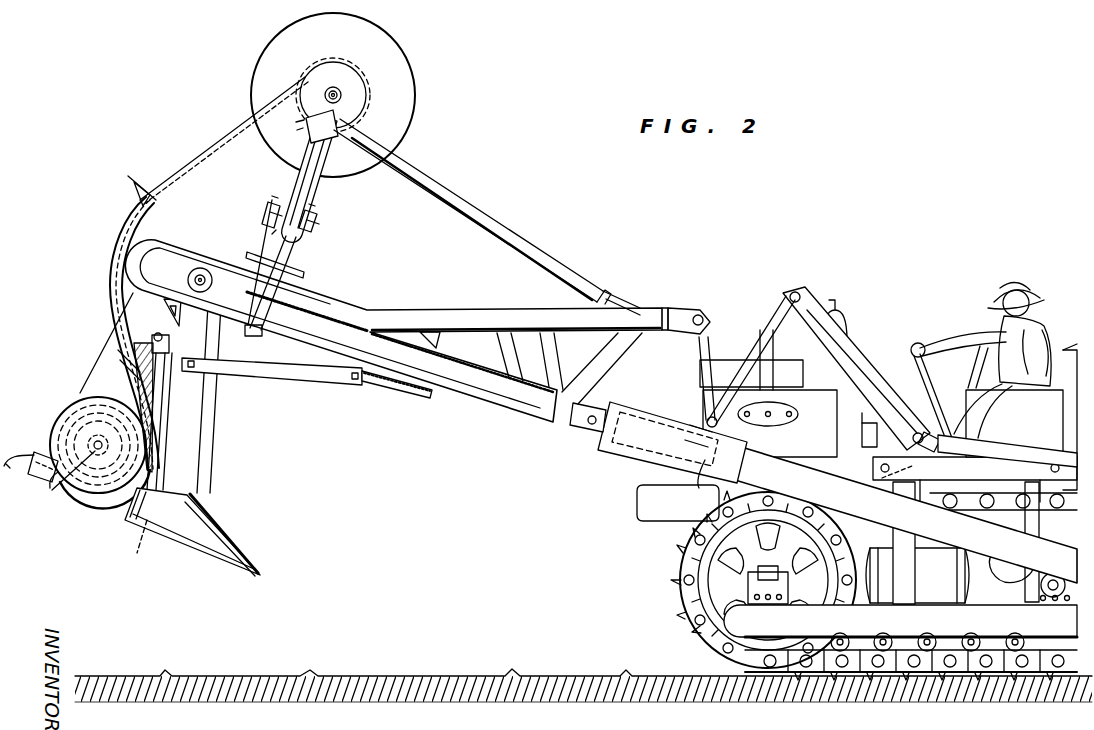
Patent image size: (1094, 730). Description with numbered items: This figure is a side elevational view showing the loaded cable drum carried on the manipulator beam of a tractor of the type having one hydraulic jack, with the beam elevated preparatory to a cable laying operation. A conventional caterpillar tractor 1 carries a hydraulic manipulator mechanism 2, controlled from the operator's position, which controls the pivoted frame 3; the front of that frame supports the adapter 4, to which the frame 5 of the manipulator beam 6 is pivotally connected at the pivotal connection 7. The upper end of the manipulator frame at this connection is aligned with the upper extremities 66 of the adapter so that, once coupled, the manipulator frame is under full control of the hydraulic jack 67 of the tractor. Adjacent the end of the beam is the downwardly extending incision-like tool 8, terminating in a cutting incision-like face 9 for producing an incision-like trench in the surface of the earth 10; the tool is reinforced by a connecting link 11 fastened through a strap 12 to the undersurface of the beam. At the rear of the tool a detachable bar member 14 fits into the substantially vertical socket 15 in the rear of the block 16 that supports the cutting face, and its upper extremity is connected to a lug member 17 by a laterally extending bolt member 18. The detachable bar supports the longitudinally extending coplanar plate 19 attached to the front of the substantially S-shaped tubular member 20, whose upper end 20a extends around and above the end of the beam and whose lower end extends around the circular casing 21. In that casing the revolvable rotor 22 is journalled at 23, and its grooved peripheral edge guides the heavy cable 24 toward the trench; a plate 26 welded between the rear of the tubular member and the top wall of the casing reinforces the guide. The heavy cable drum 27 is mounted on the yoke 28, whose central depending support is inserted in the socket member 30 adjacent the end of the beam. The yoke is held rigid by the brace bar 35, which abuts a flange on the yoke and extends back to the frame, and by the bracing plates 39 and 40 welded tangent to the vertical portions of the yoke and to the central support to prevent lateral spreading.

The caterpillar tractor 1 is at (560, 625).
The hydraulic manipulator mechanism 2 is at (848, 374).
The pivoted frame 3 is at (906, 514).
The adapter 4 is at (622, 458).
The frame of the manipulator beam 5 is at (588, 338).
The manipulator beam 6 is at (456, 350).
The pivotal connection 7 is at (622, 354).
The incision-like tool 8 is at (194, 404).
The cutting incision-like face 9 is at (218, 554).
The surface of the earth 10 is at (424, 680).
The connecting link 11 is at (296, 376).
The strap 12 is at (372, 388).
The detachable bar member 14 is at (152, 457).
The socket 15 is at (137, 553).
The block 16 is at (196, 548).
The lug member 17 is at (114, 305).
The bolt member 18 is at (150, 348).
The coplanar plate 19 is at (143, 371).
The S-shaped tubular member 20 is at (110, 248).
The upper end of the S-shaped tubular member 20a is at (144, 183).
The circular casing 21 is at (56, 442).
The revolvable rotor 22 is at (92, 502).
The journal of the rotor 23 is at (62, 490).
The heavy cable 24 is at (172, 180).
The plate 26 is at (103, 342).
The heavy cable drum 27 is at (405, 100).
The yoke 28 is at (316, 190).
The socket member 30 is at (306, 276).
The brace bar 35 is at (474, 206).
The bracing plate 39 is at (280, 210).
The bracing plate 40 is at (318, 216).
The upper extremities of the adapter 66 is at (740, 318).
The hydraulic jack 67 is at (990, 452).